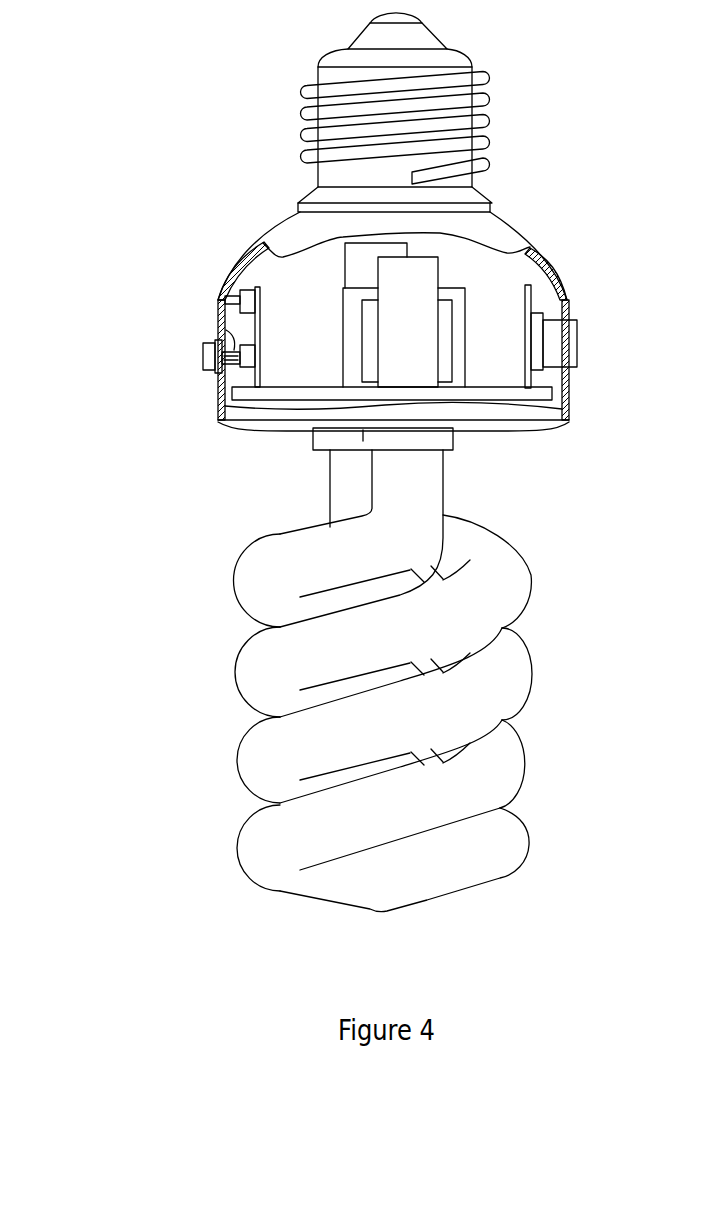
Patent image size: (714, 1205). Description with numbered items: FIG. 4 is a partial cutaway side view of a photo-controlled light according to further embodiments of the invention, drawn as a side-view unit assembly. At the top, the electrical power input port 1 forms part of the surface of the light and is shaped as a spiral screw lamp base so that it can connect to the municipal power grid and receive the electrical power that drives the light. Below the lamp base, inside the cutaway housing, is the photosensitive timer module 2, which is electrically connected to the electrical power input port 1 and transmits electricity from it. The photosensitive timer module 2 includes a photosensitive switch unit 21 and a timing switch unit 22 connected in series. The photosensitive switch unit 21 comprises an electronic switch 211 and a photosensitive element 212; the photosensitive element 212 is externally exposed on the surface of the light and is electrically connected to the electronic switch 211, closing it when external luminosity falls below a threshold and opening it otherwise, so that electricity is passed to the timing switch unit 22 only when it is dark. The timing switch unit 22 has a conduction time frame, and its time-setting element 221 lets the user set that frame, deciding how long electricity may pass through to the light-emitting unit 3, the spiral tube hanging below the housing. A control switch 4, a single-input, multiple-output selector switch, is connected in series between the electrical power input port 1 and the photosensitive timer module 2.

The electrical power input port 1 is at (453, 57).
The photosensitive timer module 2 is at (97, 248).
The photosensitive switch unit 21 is at (150, 237).
The electronic switch 211 is at (247, 280).
The photosensitive element 212 is at (228, 307).
The timing switch unit 22 is at (215, 327).
The time-setting element 221 is at (205, 365).
The light-emitting unit 3 is at (543, 528).
The control switch 4 is at (565, 345).